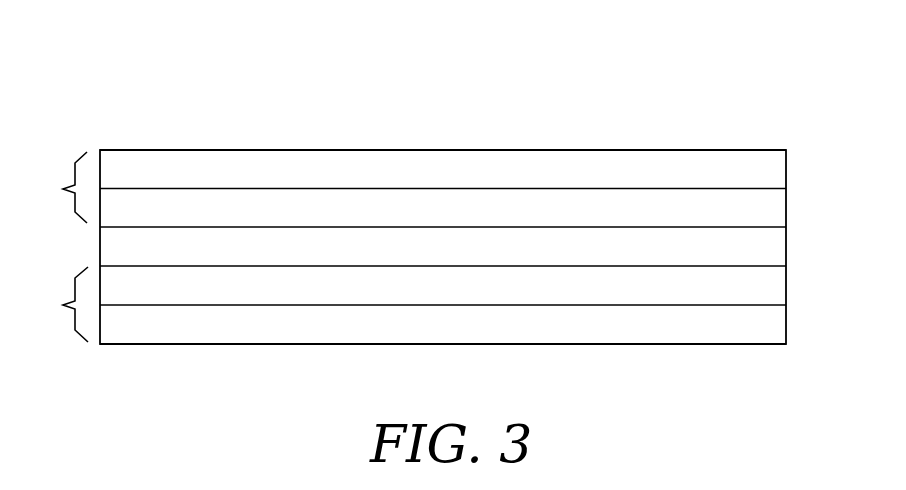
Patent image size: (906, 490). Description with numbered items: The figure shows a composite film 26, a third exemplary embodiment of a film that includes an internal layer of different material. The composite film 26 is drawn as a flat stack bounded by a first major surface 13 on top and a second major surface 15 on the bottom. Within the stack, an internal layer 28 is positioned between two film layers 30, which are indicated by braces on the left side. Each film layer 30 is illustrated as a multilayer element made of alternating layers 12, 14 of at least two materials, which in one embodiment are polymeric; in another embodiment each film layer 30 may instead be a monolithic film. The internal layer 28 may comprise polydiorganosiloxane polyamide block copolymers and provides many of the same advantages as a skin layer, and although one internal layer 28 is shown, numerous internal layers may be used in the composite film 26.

The composite film 26 is at (745, 69).
The first major surface 13 is at (227, 149).
The second major surface 15 is at (225, 345).
The layer 12 is at (760, 166).
The layer 14 is at (765, 203).
The internal layer 28 is at (765, 244).
The film layer 30 is at (55, 247).